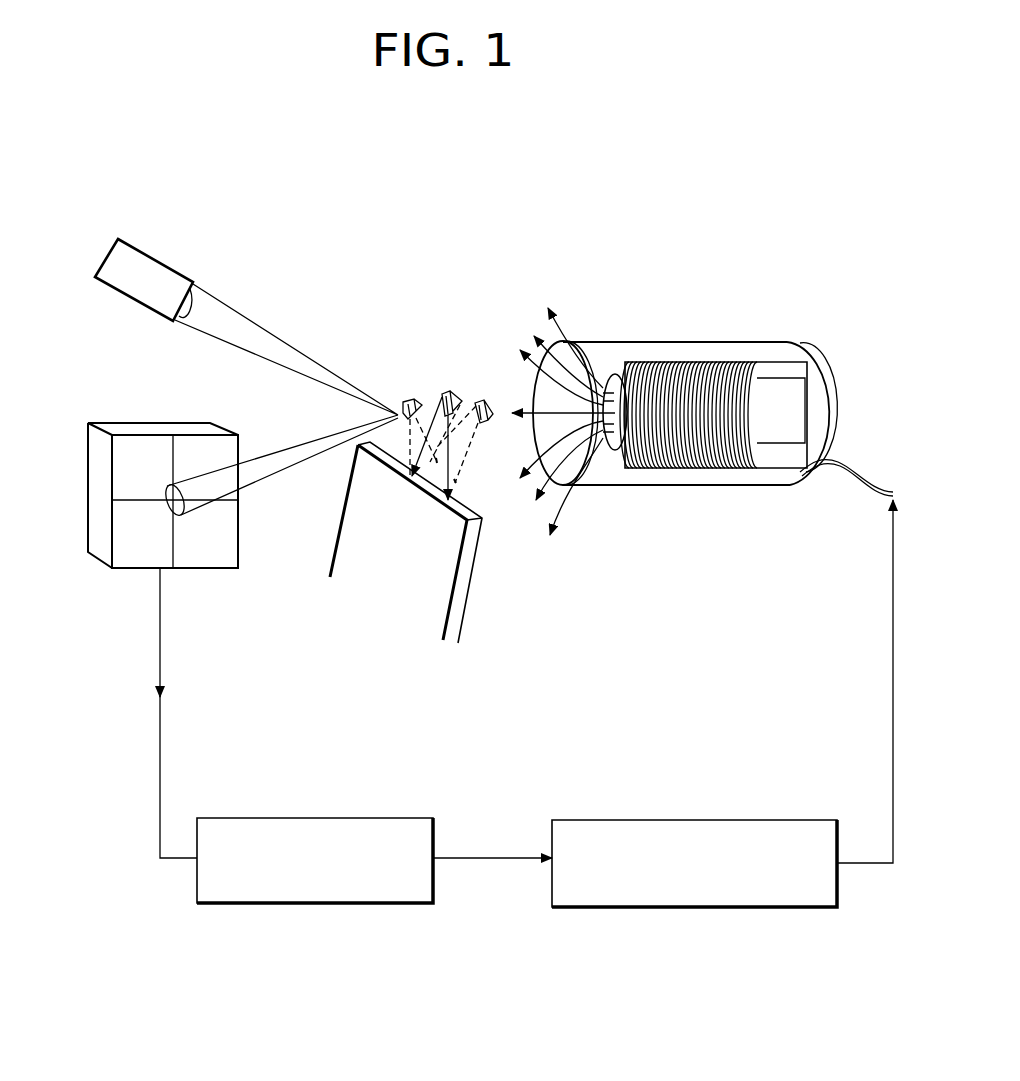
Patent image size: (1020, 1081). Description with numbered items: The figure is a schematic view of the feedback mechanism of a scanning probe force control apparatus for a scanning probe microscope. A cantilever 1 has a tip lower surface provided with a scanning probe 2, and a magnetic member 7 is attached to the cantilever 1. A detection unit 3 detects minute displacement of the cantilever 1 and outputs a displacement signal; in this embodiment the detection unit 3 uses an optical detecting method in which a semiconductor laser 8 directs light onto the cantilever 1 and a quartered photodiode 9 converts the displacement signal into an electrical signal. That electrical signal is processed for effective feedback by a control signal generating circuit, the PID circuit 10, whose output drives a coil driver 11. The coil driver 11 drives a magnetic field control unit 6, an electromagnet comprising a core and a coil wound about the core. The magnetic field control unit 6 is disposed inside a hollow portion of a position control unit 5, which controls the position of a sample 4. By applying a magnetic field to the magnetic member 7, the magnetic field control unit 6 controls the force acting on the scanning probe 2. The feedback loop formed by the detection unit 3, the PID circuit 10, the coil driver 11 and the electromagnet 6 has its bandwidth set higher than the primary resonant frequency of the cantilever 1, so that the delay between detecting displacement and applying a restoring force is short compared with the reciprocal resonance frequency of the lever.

The cantilever 1 is at (452, 432).
The scanning probe 2 is at (456, 402).
The detection unit 3 is at (87, 353).
The sample 4 is at (577, 341).
The position control unit 5 is at (705, 487).
The magnetic field control unit 6 is at (687, 362).
The magnetic member 7 is at (442, 395).
The semiconductor laser 8 is at (152, 268).
The quartered photodiode 9 is at (123, 538).
The PID circuit 10 is at (333, 818).
The coil driver 11 is at (688, 820).